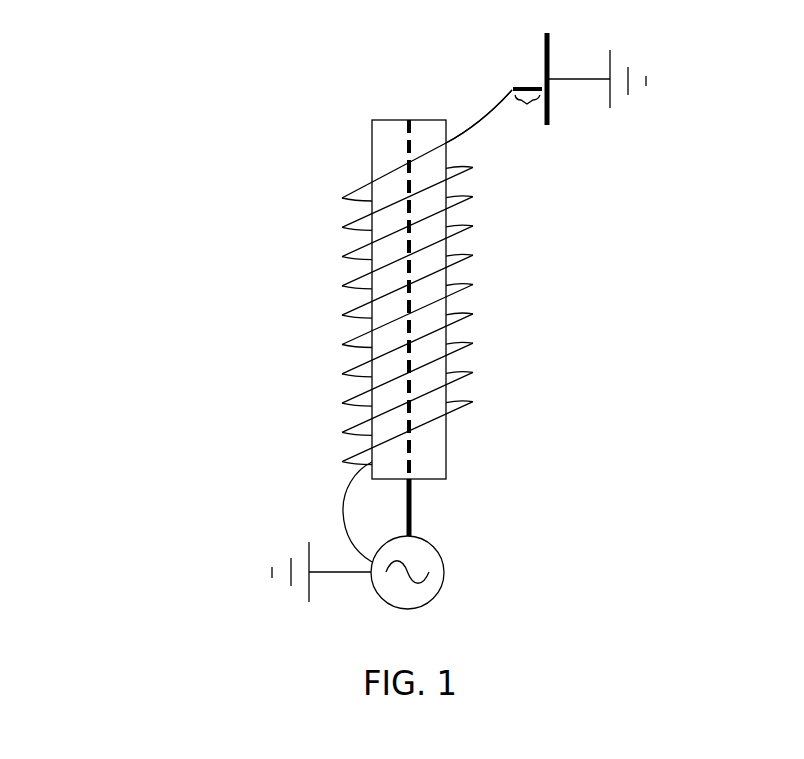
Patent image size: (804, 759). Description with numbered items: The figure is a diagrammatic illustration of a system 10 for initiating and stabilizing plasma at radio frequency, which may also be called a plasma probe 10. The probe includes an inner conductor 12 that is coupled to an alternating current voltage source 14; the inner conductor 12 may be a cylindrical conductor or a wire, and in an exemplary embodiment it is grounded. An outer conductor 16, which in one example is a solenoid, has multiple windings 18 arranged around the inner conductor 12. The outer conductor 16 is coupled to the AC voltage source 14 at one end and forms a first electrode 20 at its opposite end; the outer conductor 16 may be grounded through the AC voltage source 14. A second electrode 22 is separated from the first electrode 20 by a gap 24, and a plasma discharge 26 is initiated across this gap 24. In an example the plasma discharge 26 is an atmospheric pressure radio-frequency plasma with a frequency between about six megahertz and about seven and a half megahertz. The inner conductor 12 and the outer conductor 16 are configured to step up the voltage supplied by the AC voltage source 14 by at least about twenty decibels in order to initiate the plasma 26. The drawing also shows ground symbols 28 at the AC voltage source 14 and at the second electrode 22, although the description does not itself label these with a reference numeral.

The system 10 is at (125, 78).
The inner conductor 12 is at (446, 445).
The alternating current (AC) voltage source 14 is at (444, 572).
The outer conductor 16 is at (328, 185).
The windings 18 is at (473, 313).
The first electrode 20 is at (512, 90).
The second electrode 22 is at (543, 50).
The gap 24 is at (528, 114).
The plasma discharge 26 is at (530, 87).
The ground 28 is at (628, 48).